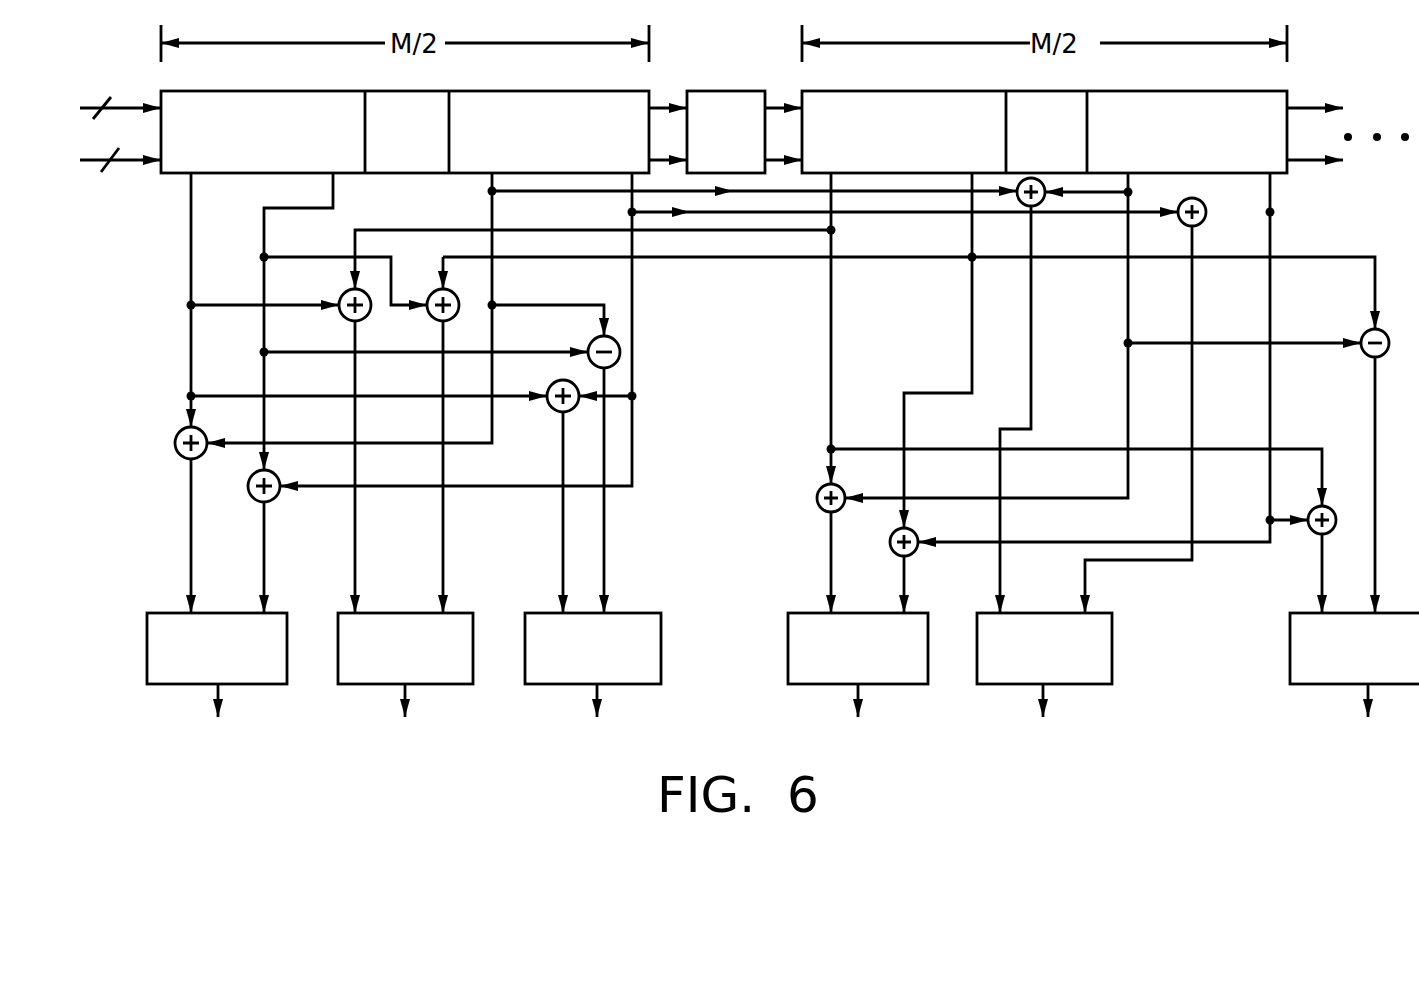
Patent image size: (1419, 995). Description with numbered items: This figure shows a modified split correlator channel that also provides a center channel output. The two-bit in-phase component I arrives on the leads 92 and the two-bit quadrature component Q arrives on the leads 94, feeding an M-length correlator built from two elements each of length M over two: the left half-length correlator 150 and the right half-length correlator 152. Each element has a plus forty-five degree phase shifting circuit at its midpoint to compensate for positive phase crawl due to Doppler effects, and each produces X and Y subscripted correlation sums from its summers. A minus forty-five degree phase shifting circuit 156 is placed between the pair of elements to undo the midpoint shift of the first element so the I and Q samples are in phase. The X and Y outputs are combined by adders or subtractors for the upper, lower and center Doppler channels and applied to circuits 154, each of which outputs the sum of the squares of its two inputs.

The leads 92 is at (125, 104).
The leads 94 is at (128, 166).
The left M/2 length correlator 150 is at (547, 91).
The right M/2 length correlator 152 is at (1168, 91).
The circuits 154 is at (188, 684).
The −45° phase shifting circuit 156 is at (700, 91).